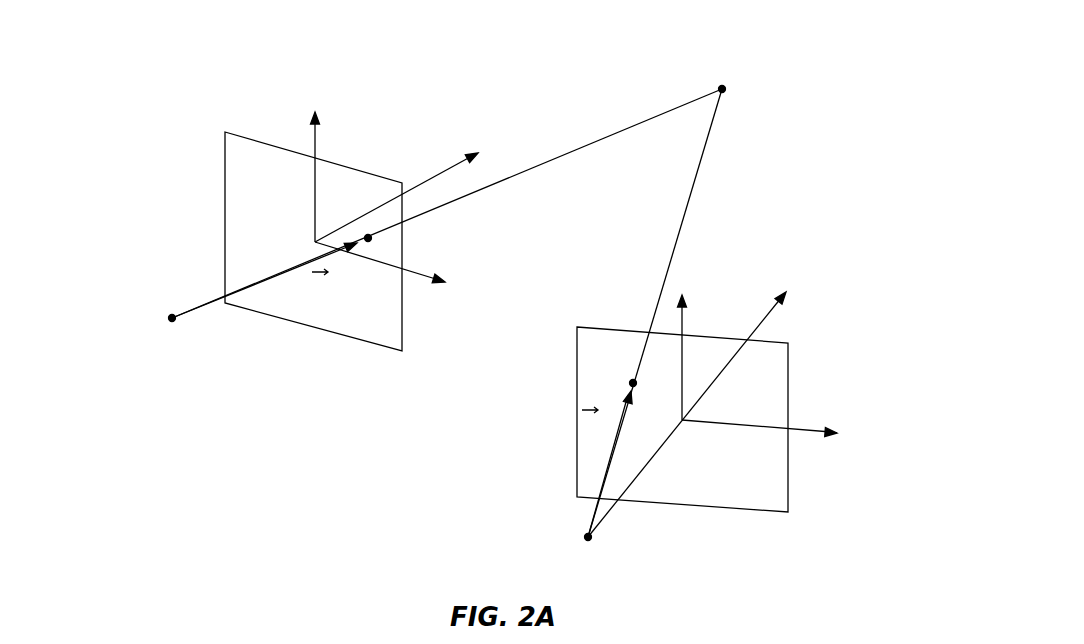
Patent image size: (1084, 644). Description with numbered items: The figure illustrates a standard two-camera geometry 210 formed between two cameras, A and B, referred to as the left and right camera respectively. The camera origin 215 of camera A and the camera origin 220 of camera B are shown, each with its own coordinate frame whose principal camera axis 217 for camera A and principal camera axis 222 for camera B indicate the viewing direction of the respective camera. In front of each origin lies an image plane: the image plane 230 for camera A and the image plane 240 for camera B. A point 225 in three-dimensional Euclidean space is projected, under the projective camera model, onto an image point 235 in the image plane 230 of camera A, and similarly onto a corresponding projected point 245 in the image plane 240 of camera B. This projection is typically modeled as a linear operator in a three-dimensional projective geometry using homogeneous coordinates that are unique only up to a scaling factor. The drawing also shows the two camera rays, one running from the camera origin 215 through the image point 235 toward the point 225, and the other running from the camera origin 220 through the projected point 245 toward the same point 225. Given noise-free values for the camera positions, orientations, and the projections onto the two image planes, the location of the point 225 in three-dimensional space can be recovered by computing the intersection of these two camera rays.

The general geometry 210 is at (163, 101).
The camera origin O_A 215 is at (166, 313).
The principal camera axis Z+_A 217 is at (512, 117).
The camera origin O_B 220 is at (583, 525).
The principal camera axis Z+_B 222 is at (826, 245).
The point P=(X,Y,Z)' 225 is at (735, 89).
The image plane I_A 230 is at (238, 184).
The point u_A=(x_A,y_A)' 235 is at (373, 253).
The image plane I_B 240 is at (777, 373).
The projected point in image I_B 245 is at (618, 383).